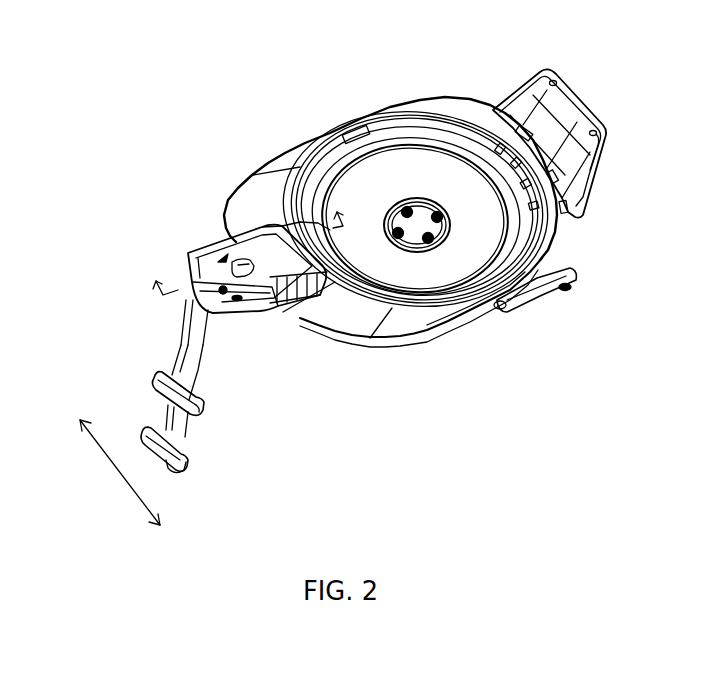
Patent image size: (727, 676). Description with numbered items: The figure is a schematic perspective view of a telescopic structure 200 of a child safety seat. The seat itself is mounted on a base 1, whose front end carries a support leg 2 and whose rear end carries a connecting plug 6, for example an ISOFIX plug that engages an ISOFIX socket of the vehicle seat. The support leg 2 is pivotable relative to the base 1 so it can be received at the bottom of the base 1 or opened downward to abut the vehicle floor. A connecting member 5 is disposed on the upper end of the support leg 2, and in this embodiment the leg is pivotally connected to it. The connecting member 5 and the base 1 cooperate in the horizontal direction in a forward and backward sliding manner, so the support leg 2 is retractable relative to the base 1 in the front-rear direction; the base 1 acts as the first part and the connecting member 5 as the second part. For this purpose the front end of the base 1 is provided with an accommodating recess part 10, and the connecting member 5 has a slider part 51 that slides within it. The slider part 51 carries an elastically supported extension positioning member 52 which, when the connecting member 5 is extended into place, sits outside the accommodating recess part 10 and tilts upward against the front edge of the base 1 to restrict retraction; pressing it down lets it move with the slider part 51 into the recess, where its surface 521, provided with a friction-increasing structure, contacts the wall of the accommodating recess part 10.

The telescopic structure 200 is at (445, 48).
The base 1 is at (297, 153).
The accommodating recess part 10 is at (229, 238).
The connecting member 5 is at (189, 254).
The extension positioning member 52 is at (249, 294).
The surface 521 is at (226, 240).
The slider part 51 is at (191, 303).
The support leg 2 is at (193, 378).
The connecting plug 6 is at (538, 292).